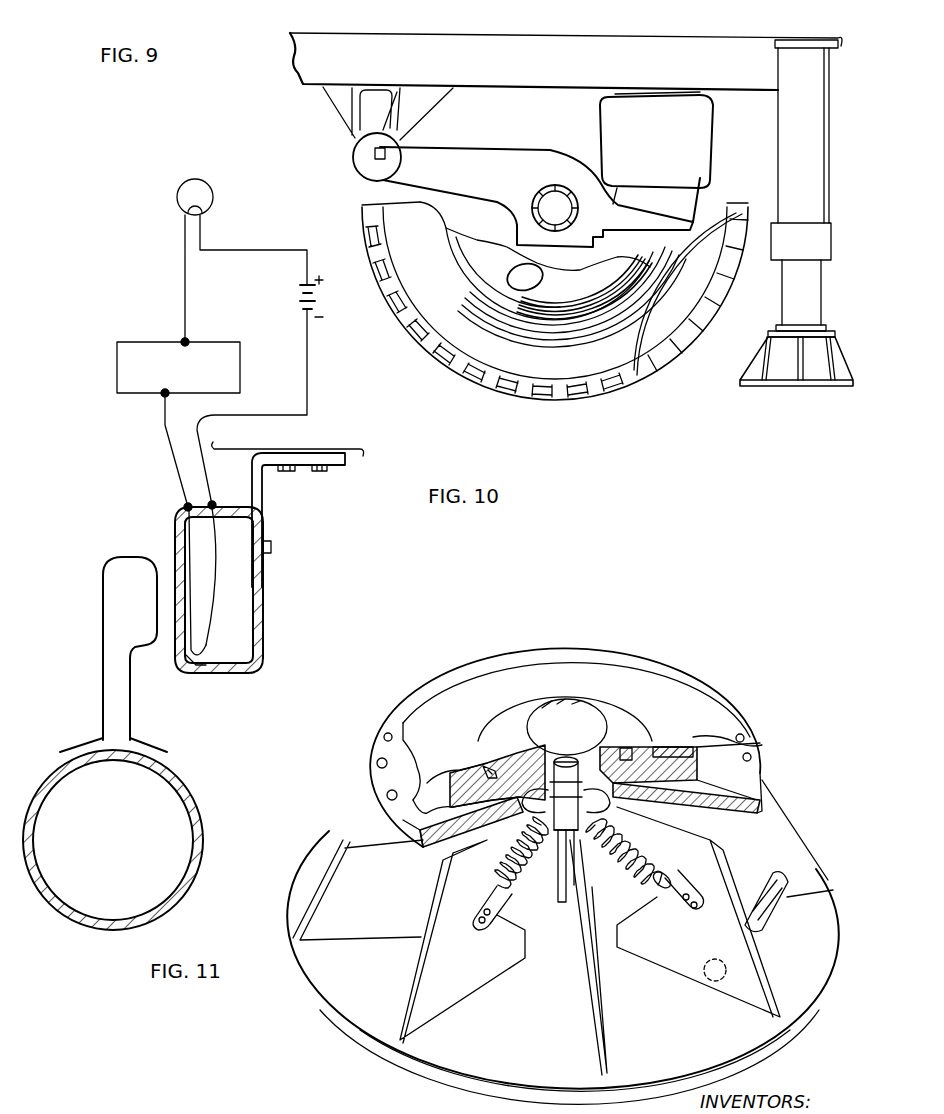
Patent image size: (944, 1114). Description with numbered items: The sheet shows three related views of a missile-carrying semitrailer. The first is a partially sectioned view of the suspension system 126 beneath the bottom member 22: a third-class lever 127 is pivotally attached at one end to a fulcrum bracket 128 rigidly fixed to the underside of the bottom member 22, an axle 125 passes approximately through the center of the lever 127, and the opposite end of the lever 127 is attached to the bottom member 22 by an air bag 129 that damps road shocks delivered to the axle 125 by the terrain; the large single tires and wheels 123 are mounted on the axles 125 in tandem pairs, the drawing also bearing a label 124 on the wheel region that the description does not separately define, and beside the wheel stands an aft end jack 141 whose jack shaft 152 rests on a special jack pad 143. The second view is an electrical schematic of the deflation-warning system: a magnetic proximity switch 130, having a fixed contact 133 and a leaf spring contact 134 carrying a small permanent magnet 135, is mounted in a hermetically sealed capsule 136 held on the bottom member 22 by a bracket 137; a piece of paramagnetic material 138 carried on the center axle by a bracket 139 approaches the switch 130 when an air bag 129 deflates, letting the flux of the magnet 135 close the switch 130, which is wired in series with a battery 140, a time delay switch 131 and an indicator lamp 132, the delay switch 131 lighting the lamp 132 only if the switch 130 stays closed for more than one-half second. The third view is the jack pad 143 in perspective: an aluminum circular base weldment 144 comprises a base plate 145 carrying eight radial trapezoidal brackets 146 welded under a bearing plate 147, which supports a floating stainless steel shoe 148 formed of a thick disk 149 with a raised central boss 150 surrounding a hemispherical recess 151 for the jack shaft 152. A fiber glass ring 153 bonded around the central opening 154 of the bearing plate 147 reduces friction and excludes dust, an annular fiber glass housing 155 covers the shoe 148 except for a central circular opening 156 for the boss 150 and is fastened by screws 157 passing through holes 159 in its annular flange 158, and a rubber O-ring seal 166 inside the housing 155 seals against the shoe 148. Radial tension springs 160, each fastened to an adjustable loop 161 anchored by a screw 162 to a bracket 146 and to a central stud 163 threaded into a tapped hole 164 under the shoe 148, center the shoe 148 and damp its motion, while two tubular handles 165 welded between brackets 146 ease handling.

In FIG. 9, the bottom member 22 is at (776, 94).
In FIG. 10, the bottom member 22 is at (345, 452).
In FIG. 9, the tires and wheels 123 is at (728, 216).
In FIG. 9, the ratchet wheel web 124 is at (585, 300).
In FIG. 10, the axle 125 is at (195, 810).
In FIG. 9, the pneumatic suspension system 126 is at (526, 182).
In FIG. 9, the third-class lever 127 is at (490, 177).
In FIG. 9, the fulcrum bracket 128 is at (426, 110).
In FIG. 9, the air bag 129 is at (664, 157).
In FIG. 10, the magnetic proximity switch 130 is at (202, 601).
In FIG. 10, the time delay switch 131 is at (240, 380).
In FIG. 10, the indicator lamp 132 is at (214, 205).
In FIG. 10, the fixed contact 133 is at (192, 670).
In FIG. 10, the leaf spring contact 134 is at (213, 628).
In FIG. 10, the permanent magnet 135 is at (230, 674).
In FIG. 10, the capsule or housing 136 is at (265, 656).
In FIG. 10, the bracket 137 is at (340, 466).
In FIG. 10, the paramagnetic material 138 is at (103, 634).
In FIG. 10, the bracket 139 is at (148, 756).
In FIG. 10, the battery 140 is at (327, 297).
In FIG. 9, the aft end jack 141 is at (806, 211).
In FIG. 9, the jack pad 143 is at (832, 386).
In FIG. 11, the jack pad 143 is at (764, 719).
In FIG. 11, the circular base weldment 144 is at (564, 967).
In FIG. 11, the base plate 145 is at (808, 989).
In FIG. 11, the trapezoidal brackets 146 is at (780, 817).
In FIG. 11, the bearing plate 147 is at (418, 842).
In FIG. 11, the floating shoe 148 is at (690, 748).
In FIG. 11, the disk 149 is at (458, 781).
In FIG. 11, the central boss 150 is at (610, 722).
In FIG. 11, the hemispherical recess 151 is at (575, 712).
In FIG. 9, the jack shaft 152 is at (783, 303).
In FIG. 11, the fiber glass ring 153 is at (723, 812).
In FIG. 11, the central opening 154 is at (567, 762).
In FIG. 11, the annular fiber glass housing 155 is at (697, 690).
In FIG. 11, the central circular opening 156 is at (665, 726).
In FIG. 11, the screws 157 is at (378, 762).
In FIG. 11, the annular flange 158 is at (745, 738).
In FIG. 11, the holes 159 is at (752, 757).
In FIG. 11, the tension springs 160 is at (522, 892).
In FIG. 11, the adjustable loop 161 is at (645, 900).
In FIG. 11, the screw 162 is at (488, 918).
In FIG. 11, the central stud 163 is at (562, 876).
In FIG. 11, the tapped hole 164 is at (628, 744).
In FIG. 11, the tubular handles 165 is at (783, 910).
In FIG. 11, the rubber O-ring seal 166 is at (485, 768).